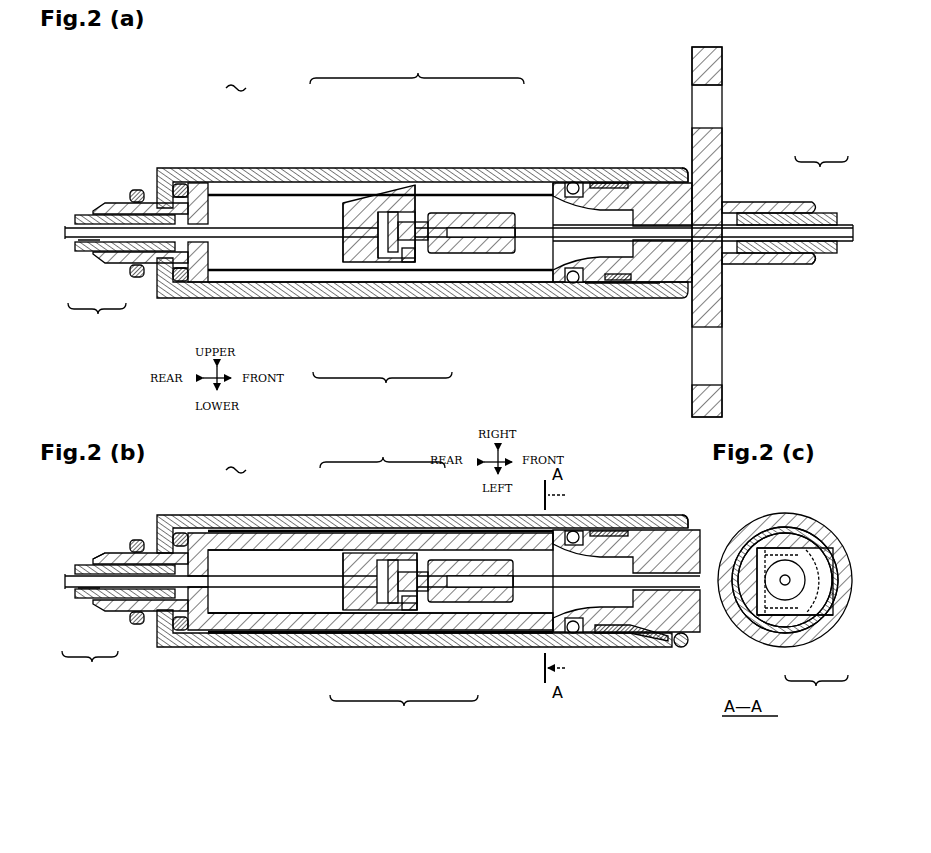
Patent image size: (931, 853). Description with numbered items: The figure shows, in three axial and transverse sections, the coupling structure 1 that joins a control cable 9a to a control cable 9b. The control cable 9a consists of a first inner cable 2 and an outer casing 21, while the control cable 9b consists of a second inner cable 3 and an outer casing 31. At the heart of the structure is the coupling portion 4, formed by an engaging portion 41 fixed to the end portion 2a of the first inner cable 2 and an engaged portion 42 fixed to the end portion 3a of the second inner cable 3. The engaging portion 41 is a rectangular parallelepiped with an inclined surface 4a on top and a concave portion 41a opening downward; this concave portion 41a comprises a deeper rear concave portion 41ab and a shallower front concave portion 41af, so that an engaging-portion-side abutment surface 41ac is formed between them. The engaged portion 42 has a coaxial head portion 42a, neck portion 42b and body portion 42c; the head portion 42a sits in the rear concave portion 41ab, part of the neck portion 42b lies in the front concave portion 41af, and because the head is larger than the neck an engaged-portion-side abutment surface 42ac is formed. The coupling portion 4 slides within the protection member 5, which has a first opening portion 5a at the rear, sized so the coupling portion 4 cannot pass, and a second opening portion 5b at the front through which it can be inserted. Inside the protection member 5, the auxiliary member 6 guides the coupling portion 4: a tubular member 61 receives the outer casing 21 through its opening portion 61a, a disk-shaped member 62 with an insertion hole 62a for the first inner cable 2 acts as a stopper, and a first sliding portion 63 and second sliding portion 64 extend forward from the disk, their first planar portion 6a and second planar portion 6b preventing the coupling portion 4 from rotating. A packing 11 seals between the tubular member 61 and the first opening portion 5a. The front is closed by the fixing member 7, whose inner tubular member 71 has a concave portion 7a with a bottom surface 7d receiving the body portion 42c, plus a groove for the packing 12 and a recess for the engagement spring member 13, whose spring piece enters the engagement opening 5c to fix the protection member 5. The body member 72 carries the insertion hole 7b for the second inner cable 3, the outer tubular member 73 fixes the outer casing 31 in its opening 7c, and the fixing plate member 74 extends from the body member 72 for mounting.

The coupling structure 1 is at (236, 268).
The first inner cable 2 is at (70, 240).
The end portion 2a is at (322, 272).
The outer casing 21 is at (92, 252).
The second inner cable 3 is at (848, 226).
The end portion 3a is at (522, 237).
The outer casing 31 is at (826, 213).
The coupling portion 4 is at (579, 381).
The inclined surface 4a is at (382, 208).
The engaging portion 41 is at (350, 210).
The concave portion 41a is at (395, 549).
The rear concave portion 41ab is at (380, 262).
The engaging-portion-side abutment surface 41ac is at (380, 258).
The front concave portion 41af is at (408, 262).
The engaged portion 42 is at (490, 213).
The head portion 42a is at (392, 215).
The engaged-portion-side abutment surface 42ac is at (410, 262).
The neck portion 42b is at (415, 222).
The body portion 42c is at (455, 213).
The protection member 5 is at (296, 168).
The first opening portion 5a is at (180, 196).
The second opening portion 5b is at (690, 180).
The engagement opening 5c is at (660, 648).
The auxiliary member 6 is at (197, 183).
The first planar portion 6a is at (300, 552).
The second planar portion 6b is at (300, 612).
The tubular member 61 is at (115, 612).
The opening portion 61a is at (97, 208).
The disk-shaped member 62 is at (200, 612).
The insertion hole 62a is at (210, 582).
The first sliding portion 63 is at (236, 200).
The second sliding portion 64 is at (240, 620).
The fixing member 7 is at (724, 139).
The concave portion 7a is at (572, 211).
The insertion hole 7b is at (705, 250).
The opening 7c is at (816, 262).
The bottom surface 7d is at (628, 282).
The inner tubular member 71 is at (576, 182).
The body member 72 is at (612, 210).
The outer tubular member 73 is at (780, 264).
The fixing plate member 74 is at (712, 68).
The control cable 9a is at (94, 491).
The control cable 9b is at (821, 149).
The packing 11 is at (138, 277).
The packing 12 is at (573, 284).
The engagement spring member 13 is at (610, 290).